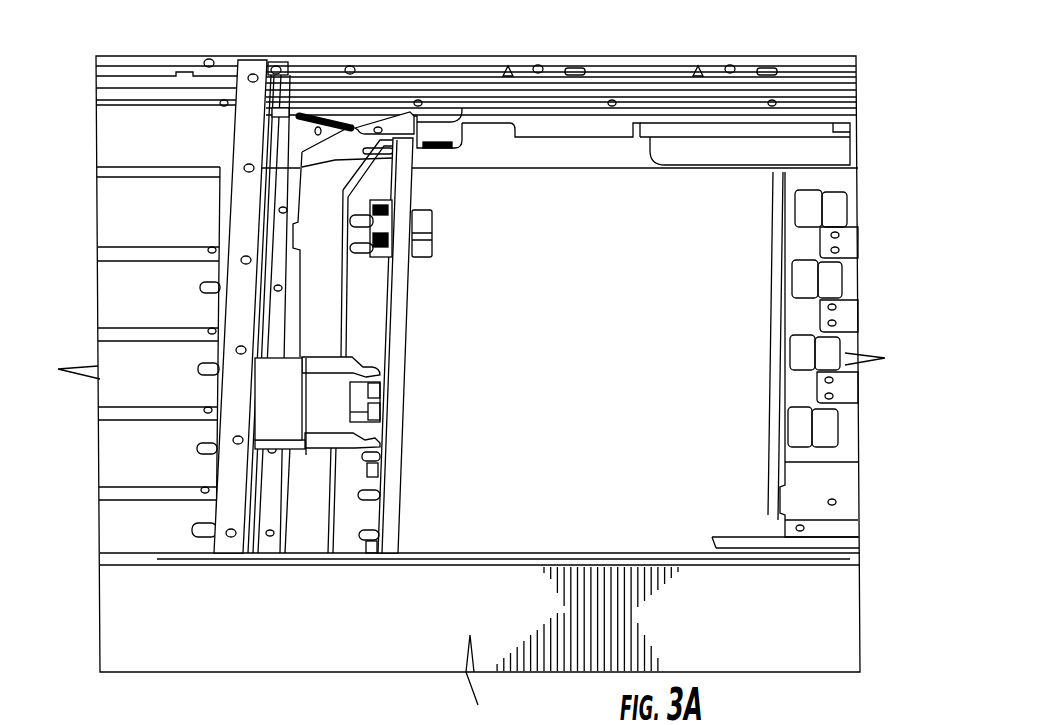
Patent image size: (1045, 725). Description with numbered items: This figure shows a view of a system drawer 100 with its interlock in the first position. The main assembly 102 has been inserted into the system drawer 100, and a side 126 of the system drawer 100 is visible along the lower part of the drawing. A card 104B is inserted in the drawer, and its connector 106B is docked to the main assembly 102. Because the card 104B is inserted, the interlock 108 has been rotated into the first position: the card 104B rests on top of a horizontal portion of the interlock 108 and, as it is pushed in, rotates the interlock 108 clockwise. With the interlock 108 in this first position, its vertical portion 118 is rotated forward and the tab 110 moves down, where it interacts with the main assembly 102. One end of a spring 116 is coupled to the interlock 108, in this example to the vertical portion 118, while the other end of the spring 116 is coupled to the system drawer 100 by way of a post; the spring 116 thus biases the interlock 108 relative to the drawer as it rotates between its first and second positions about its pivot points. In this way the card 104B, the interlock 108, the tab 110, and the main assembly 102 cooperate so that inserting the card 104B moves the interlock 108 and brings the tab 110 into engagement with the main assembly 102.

The system drawer 100 is at (815, 40).
The main assembly 102 is at (843, 487).
The card 104B is at (273, 408).
The connector 106B is at (357, 398).
The interlock 108 is at (312, 315).
The tab 110 is at (434, 128).
The spring 116 is at (317, 117).
The vertical portion 118 is at (344, 150).
The side 126 is at (847, 613).